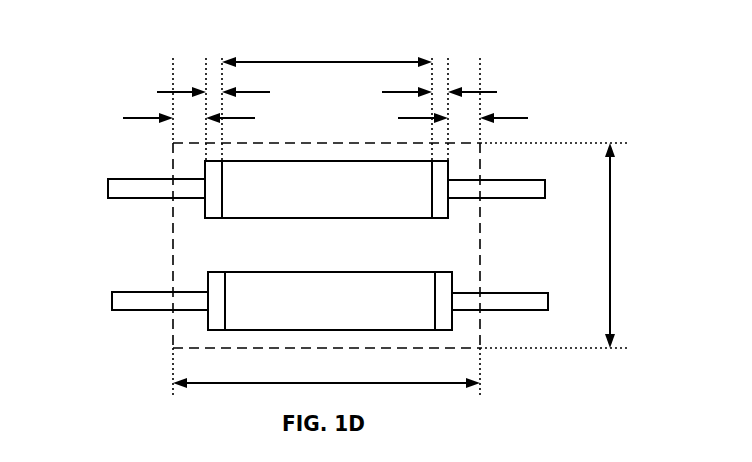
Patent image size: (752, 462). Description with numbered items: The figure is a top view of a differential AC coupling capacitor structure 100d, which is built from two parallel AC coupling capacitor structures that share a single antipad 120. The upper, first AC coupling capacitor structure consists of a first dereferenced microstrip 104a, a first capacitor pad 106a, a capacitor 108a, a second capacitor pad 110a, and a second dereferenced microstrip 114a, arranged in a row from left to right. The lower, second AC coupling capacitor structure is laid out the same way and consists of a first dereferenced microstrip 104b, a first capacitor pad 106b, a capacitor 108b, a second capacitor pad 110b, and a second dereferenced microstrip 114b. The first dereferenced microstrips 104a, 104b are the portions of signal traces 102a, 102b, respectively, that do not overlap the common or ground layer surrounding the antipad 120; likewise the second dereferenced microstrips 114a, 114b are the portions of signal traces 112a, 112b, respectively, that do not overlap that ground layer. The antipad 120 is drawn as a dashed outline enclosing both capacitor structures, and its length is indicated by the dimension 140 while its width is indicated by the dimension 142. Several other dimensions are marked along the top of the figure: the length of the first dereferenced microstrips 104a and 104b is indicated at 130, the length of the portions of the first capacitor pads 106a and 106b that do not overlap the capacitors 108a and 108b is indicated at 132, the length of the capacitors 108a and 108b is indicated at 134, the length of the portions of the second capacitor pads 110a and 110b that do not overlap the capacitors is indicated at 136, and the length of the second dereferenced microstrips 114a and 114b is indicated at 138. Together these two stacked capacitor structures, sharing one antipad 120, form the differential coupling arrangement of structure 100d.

The differential AC coupling capacitor structure 100d is at (550, 44).
The signal trace 102a is at (113, 172).
The first dereferenced microstrip 104a is at (187, 190).
The first capacitor pad 106a is at (213, 208).
The capacitor 108a is at (309, 172).
The second capacitor pad 110a is at (438, 208).
The signal trace 112a is at (540, 174).
The second dereferenced microstrip 114a is at (467, 188).
The signal trace 102b is at (129, 287).
The first dereferenced microstrip 104b is at (202, 302).
The first capacitor pad 106b is at (217, 318).
The capacitor 108b is at (327, 262).
The second capacitor pad 110b is at (443, 318).
The signal trace 112b is at (539, 288).
The second dereferenced microstrip 114b is at (465, 300).
The antipad 120 is at (330, 350).
The length of first dereferenced microstrips 130 is at (132, 118).
The length of non-overlapping portion of first capacitor pads 132 is at (163, 92).
The length of capacitors 134 is at (322, 62).
The length of non-overlapping portion of second capacitor pads 136 is at (487, 92).
The length of second dereferenced microstrips 138 is at (515, 118).
The length of antipad 140 is at (393, 384).
The width of antipad 142 is at (612, 247).